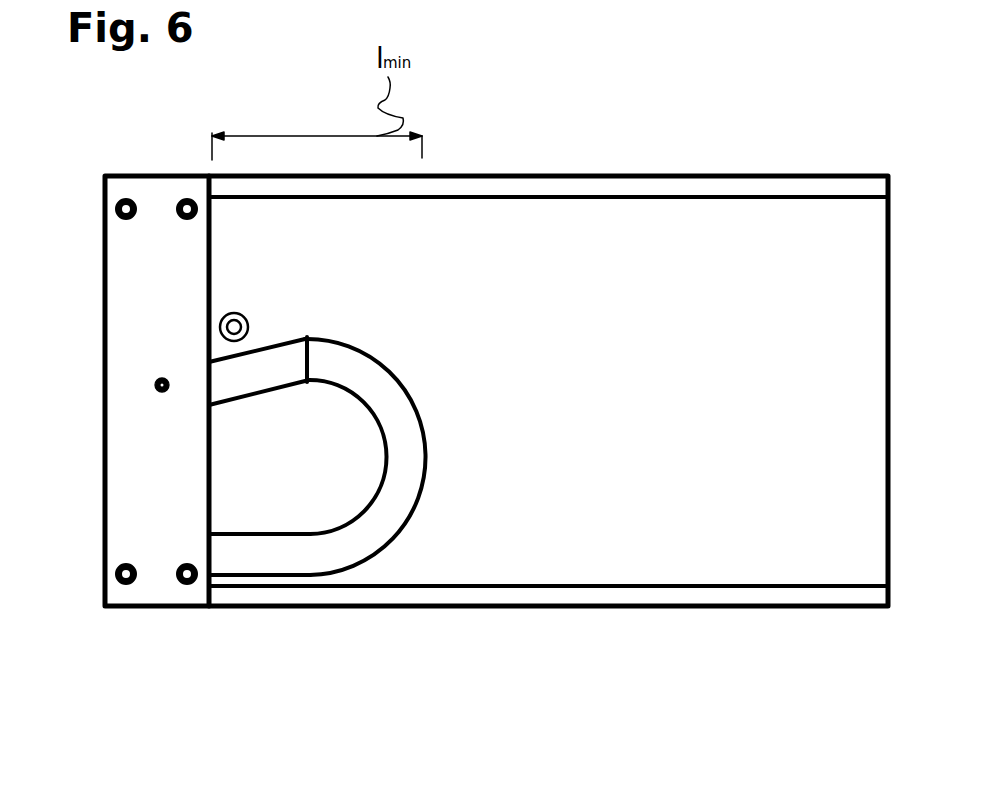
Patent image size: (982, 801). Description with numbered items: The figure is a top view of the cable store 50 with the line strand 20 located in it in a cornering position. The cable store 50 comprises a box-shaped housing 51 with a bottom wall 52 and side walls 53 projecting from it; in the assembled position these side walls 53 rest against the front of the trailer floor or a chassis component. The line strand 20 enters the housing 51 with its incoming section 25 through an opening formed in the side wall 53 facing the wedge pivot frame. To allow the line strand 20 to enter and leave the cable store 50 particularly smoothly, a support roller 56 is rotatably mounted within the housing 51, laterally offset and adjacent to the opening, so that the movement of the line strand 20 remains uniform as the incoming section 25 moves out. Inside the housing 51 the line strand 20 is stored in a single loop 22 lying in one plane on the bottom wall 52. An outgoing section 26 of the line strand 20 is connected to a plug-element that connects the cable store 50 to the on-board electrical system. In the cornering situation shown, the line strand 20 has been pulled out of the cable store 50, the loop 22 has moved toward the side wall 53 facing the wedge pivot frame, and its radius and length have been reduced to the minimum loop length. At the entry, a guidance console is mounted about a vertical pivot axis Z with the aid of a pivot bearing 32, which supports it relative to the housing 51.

The line strand 20 is at (336, 413).
The loop 22 is at (427, 433).
The incoming section 25 is at (287, 348).
The outgoing section 26 is at (287, 555).
The pivot bearing 32 is at (101, 404).
The vertical pivot axis Z is at (155, 382).
The cable store 50 is at (793, 163).
The housing 51 is at (643, 618).
The bottom wall 52 is at (663, 397).
The side walls 53 is at (637, 185).
The support roller 56 is at (223, 318).